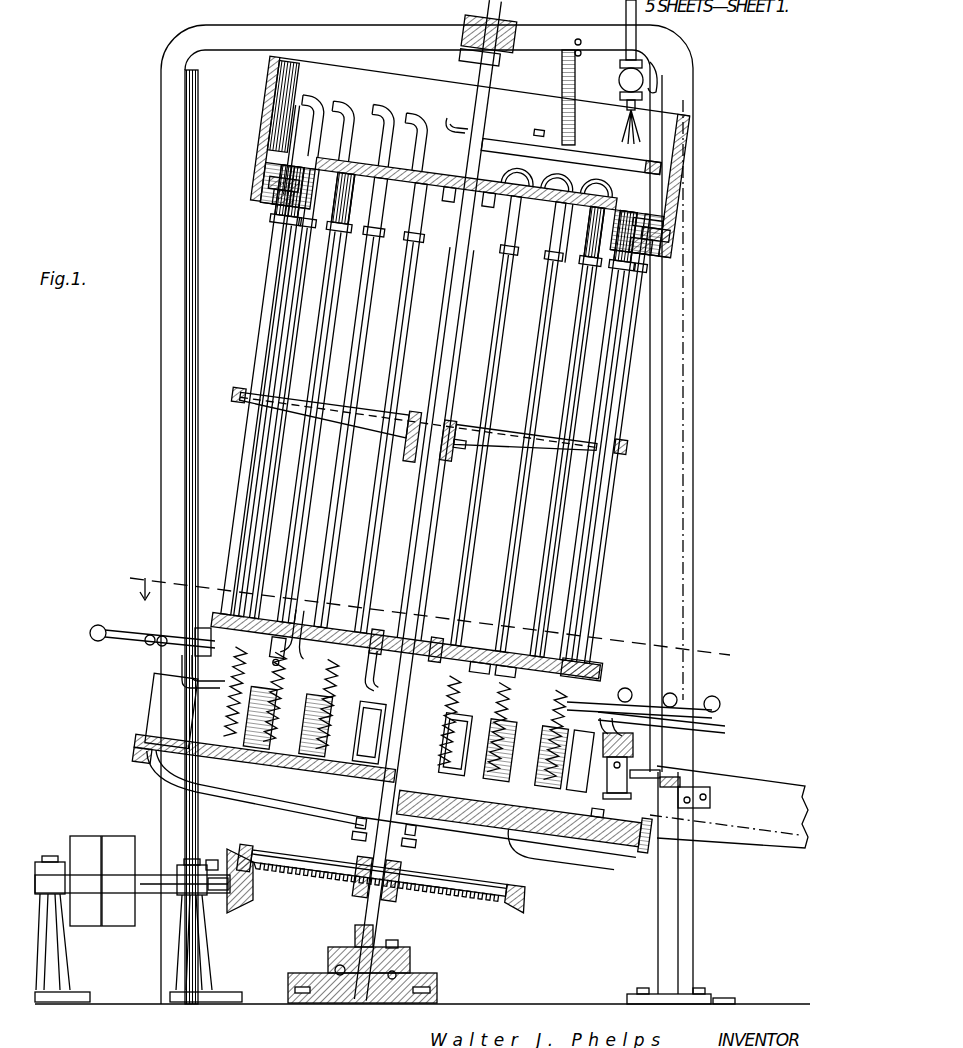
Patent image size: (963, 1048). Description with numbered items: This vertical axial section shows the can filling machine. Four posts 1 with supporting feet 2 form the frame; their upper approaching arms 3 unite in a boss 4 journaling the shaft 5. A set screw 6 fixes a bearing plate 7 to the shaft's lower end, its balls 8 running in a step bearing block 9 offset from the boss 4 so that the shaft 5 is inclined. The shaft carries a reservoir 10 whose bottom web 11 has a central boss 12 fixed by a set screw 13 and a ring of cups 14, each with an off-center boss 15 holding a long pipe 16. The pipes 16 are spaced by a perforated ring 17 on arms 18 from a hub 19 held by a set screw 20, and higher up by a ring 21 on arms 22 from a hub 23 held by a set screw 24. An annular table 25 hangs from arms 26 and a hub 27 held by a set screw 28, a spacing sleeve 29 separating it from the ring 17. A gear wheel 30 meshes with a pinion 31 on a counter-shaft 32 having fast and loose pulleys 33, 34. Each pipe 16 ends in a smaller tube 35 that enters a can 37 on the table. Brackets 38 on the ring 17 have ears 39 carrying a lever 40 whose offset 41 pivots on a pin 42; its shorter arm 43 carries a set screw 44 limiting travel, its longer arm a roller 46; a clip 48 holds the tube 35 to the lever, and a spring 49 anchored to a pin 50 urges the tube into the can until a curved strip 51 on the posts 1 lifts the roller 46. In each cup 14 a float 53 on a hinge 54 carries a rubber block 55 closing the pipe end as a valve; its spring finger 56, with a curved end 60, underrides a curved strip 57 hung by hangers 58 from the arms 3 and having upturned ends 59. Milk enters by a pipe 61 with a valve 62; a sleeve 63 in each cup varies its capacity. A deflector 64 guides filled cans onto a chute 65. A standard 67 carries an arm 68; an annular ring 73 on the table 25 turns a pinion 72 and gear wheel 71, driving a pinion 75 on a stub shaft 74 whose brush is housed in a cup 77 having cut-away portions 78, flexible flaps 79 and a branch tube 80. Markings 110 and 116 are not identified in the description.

The posts 1 is at (160, 470).
The supporting feet 2 is at (150, 1000).
The approaching arms 3 is at (335, 38).
The boss 4 is at (468, 28).
The shaft 5 is at (446, 342).
The set screw 6 is at (394, 944).
The bearing plate 7 is at (340, 948).
The balls 8 is at (330, 968).
The step bearing block 9 is at (340, 1002).
The reservoir 10 is at (268, 75).
The web 11 is at (412, 172).
The boss 12 is at (460, 225).
The set screw 13 is at (490, 205).
The cups 14 is at (276, 186).
The boss 15 is at (282, 212).
The pipe 16 is at (348, 464).
The ring 17 is at (596, 660).
The arms 18 is at (350, 640).
The hub 19 is at (392, 648).
The set screw 20 is at (440, 652).
The perforated ring 21 is at (244, 392).
The arms 22 is at (372, 438).
The hub 23 is at (420, 462).
The set screw 24 is at (454, 470).
The annular table 25 is at (145, 744).
The arms 26 is at (268, 790).
The hub 27 is at (430, 818).
The set screw 28 is at (428, 838).
The spacing sleeve 29 is at (360, 770).
The gear wheel 30 is at (522, 898).
The pinion 31 is at (246, 900).
The counter-shaft 32 is at (156, 874).
The fast pulley 33 is at (122, 924).
The loose pulley 34 is at (90, 924).
The tube 35 is at (180, 665).
The can 37 is at (160, 700).
The depending brackets 38 is at (498, 664).
The spaced ears 39 is at (372, 684).
The lever 40 is at (148, 632).
The offset 41 is at (450, 704).
The pivot pin 42 is at (330, 676).
The shorter arm 43 is at (286, 632).
The set screw 44 is at (290, 620).
The roller 46 is at (98, 626).
The clip 48 is at (208, 630).
The spring 49 is at (468, 740).
The pin 50 is at (545, 775).
The curved strip 51 is at (720, 724).
The float 53 is at (268, 178).
The hinge 54 is at (678, 228).
The block 55 is at (262, 205).
The spring finger 56 is at (275, 160).
The curved strip 57 is at (585, 150).
The hangers 58 is at (562, 80).
The upwardly turned ends 59 is at (452, 116).
The curved ends 60 is at (418, 114).
The pipe 61 is at (626, 16).
The valve 62 is at (622, 78).
The sleeve 63 is at (266, 130).
The deflector 64 is at (590, 836).
The chute 65 is at (782, 848).
The standard 67 is at (660, 918).
The arm 68 is at (640, 772).
The gear wheel 71 is at (690, 792).
The pinion 72 is at (648, 838).
The annular ring 73 is at (142, 756).
The stub shaft 74 is at (596, 856).
The pinion 75 is at (612, 780).
The cup 77 is at (612, 760).
The cut away portions 78 is at (640, 748).
The flexible flaps 79 is at (630, 700).
The branch tube 80 is at (698, 808).
The lever rod 110 is at (680, 700).
The handle ball 116 is at (718, 700).